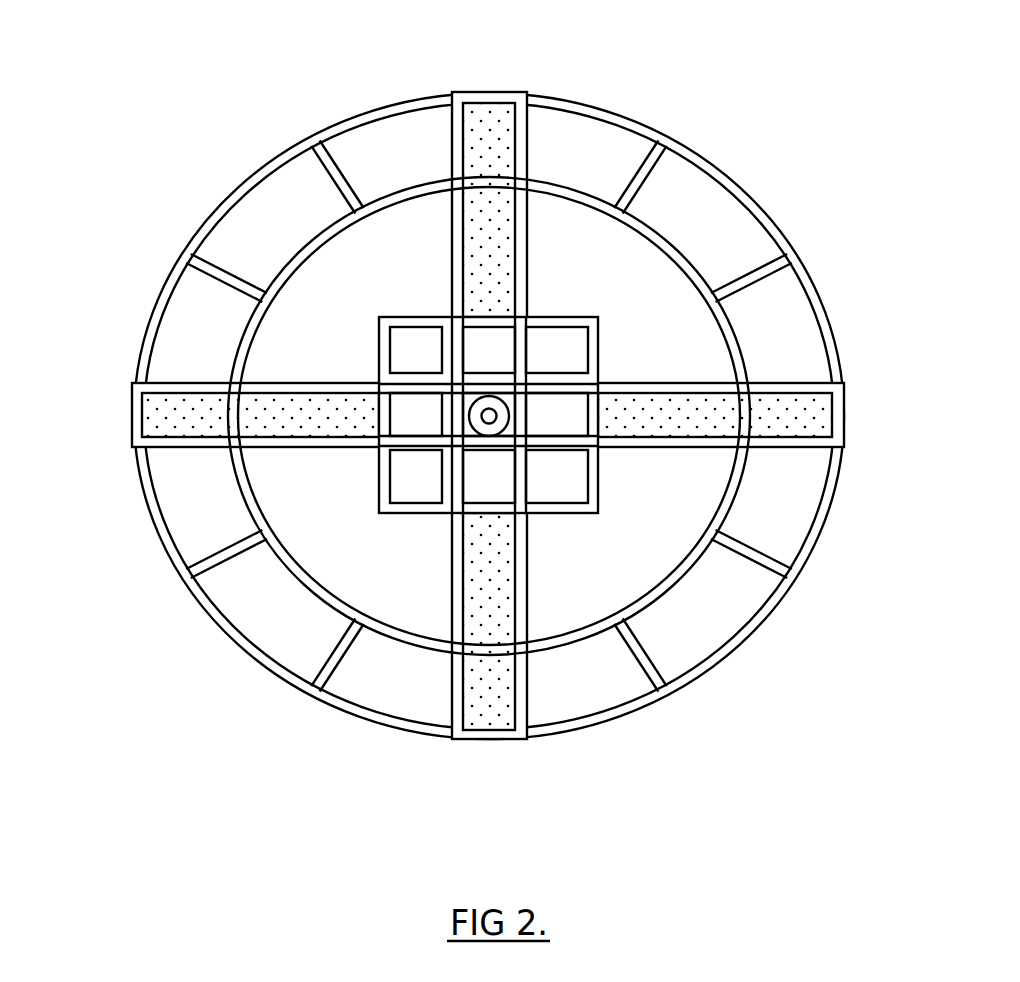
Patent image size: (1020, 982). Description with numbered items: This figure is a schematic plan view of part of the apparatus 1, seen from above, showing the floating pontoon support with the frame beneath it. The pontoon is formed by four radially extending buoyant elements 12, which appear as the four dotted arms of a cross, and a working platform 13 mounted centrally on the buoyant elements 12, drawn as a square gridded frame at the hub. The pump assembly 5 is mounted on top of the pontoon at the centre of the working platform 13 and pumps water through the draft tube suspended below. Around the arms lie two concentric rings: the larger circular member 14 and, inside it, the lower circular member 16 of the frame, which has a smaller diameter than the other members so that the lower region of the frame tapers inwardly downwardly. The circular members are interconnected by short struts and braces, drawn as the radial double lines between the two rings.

The apparatus 1 is at (487, 397).
The pump assembly 5 is at (498, 414).
The buoyant elements 12 is at (505, 397).
The working platform 13 is at (568, 348).
The circular member 14 is at (743, 647).
The lower circular member 16 is at (703, 562).